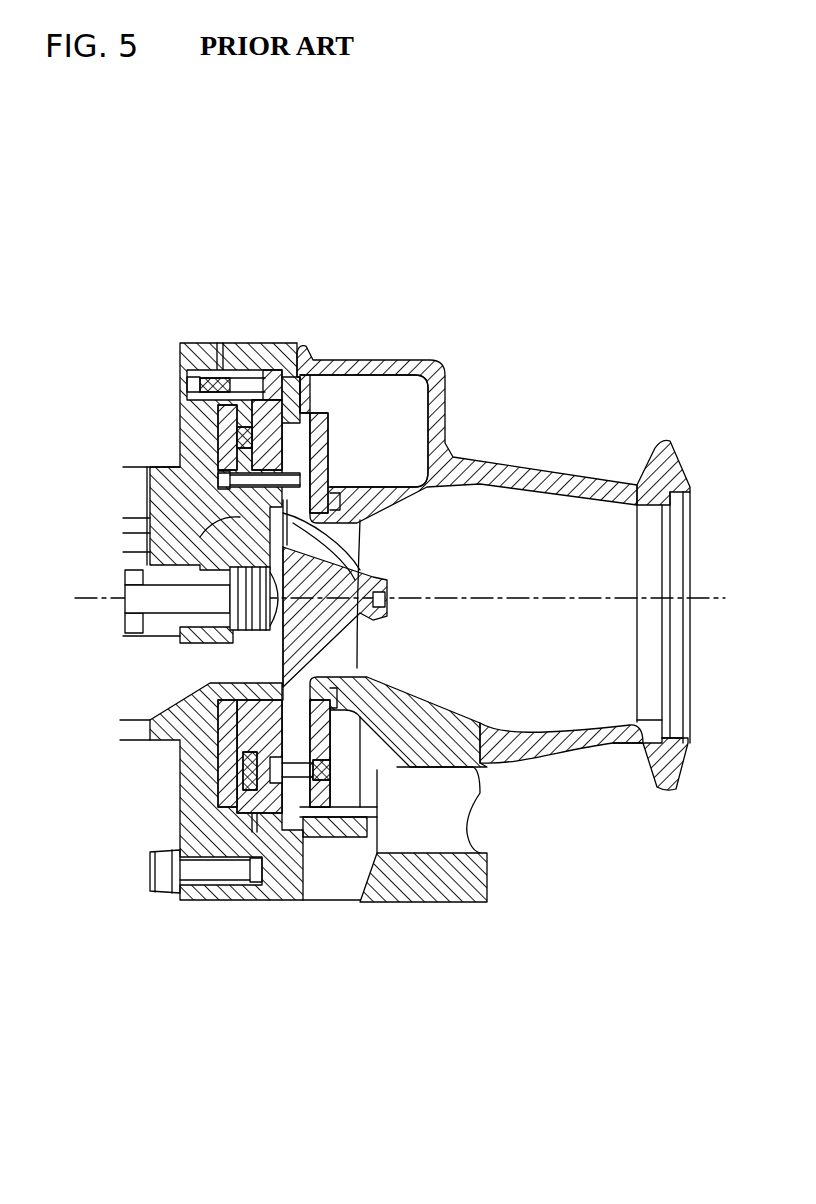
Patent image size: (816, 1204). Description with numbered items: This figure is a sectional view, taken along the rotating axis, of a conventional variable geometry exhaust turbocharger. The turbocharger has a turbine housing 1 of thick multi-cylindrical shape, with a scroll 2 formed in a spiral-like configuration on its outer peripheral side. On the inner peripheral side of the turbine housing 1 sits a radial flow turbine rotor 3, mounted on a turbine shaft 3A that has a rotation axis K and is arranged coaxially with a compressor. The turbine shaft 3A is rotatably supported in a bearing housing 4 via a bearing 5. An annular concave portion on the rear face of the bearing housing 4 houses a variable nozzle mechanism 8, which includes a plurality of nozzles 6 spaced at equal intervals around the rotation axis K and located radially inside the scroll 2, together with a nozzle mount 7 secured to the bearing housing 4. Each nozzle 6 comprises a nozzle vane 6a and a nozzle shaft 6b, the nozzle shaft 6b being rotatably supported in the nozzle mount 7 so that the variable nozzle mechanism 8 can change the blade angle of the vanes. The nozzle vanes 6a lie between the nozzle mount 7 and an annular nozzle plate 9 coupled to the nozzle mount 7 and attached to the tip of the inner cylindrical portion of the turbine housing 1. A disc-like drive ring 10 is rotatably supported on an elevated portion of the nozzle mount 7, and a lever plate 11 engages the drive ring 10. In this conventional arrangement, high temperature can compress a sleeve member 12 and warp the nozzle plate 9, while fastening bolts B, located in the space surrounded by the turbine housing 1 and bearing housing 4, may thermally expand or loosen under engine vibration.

The turbine housing 1 is at (432, 373).
The scroll 2 is at (407, 412).
The turbine rotor 3 is at (343, 540).
The turbine shaft 3A is at (176, 606).
The bearing housing 4 is at (165, 492).
The bearing 5 is at (212, 632).
The nozzle 6 is at (340, 568).
The nozzle vane 6a is at (333, 412).
The nozzle shaft 6b is at (240, 518).
The nozzle mount 7 is at (283, 422).
The variable nozzle mechanism 8 is at (212, 412).
The nozzle plate 9 is at (320, 462).
The drive ring 10 is at (236, 441).
The lever plate 11 is at (227, 435).
The sleeve member 12 is at (313, 893).
The fastening bolt B is at (283, 768).
The rotation axis K is at (600, 597).